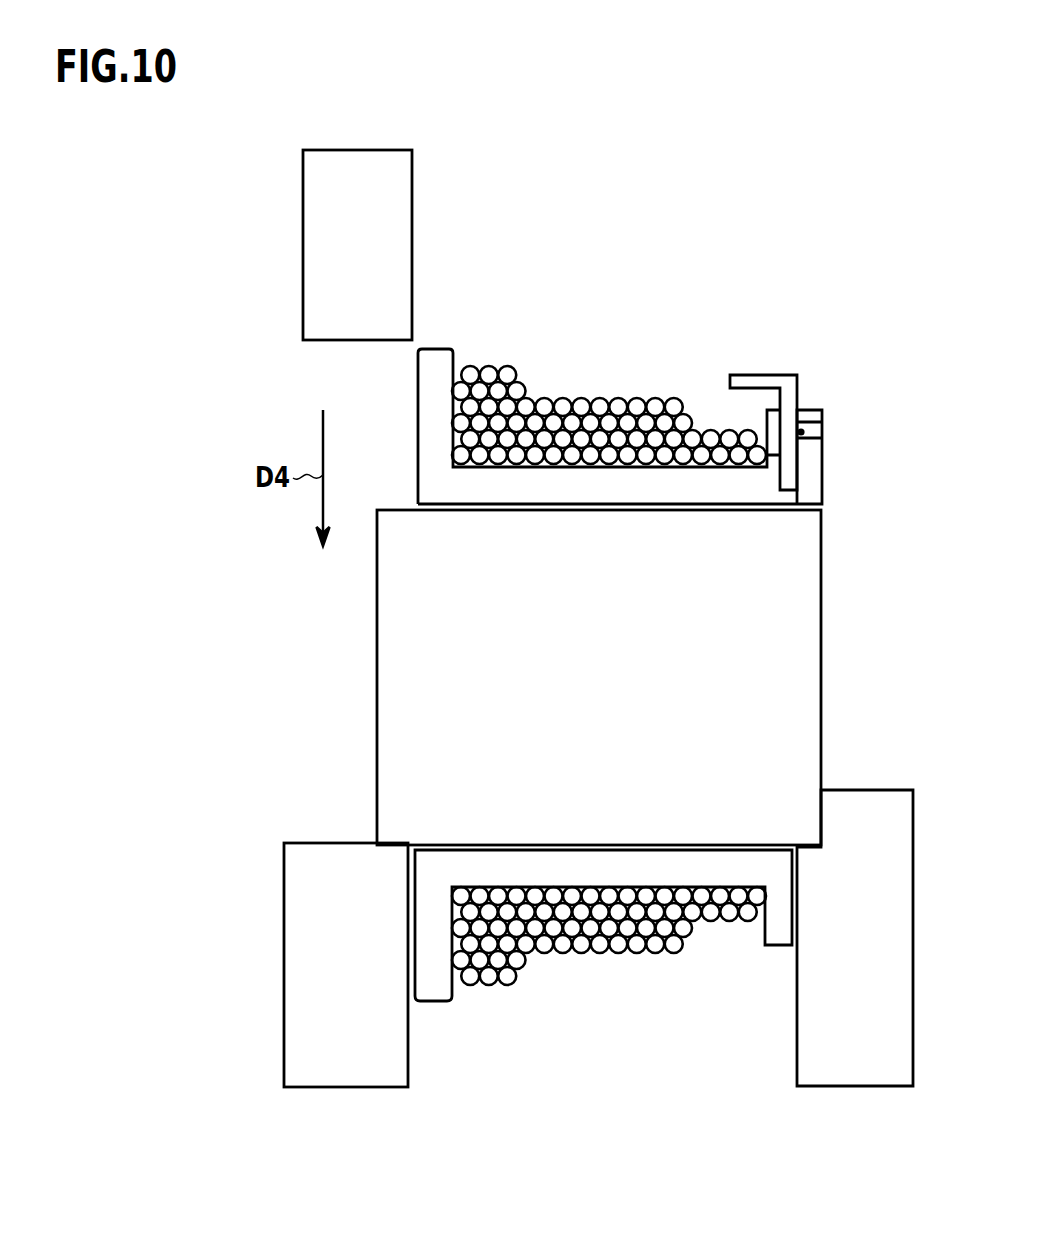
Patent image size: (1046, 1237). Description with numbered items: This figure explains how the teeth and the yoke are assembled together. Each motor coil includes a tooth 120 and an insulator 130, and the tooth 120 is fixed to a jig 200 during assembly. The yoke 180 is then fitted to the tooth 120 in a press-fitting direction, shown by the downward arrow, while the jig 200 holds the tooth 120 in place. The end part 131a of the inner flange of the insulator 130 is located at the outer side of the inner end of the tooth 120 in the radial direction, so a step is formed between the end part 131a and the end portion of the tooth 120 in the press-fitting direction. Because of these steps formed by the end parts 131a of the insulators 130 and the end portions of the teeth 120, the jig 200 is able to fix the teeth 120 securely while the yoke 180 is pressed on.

The yoke 180 is at (327, 225).
The insulator 130 is at (712, 483).
The tooth 120 is at (799, 608).
The end part of inner flange 131a is at (778, 928).
The jig 200 is at (823, 1055).